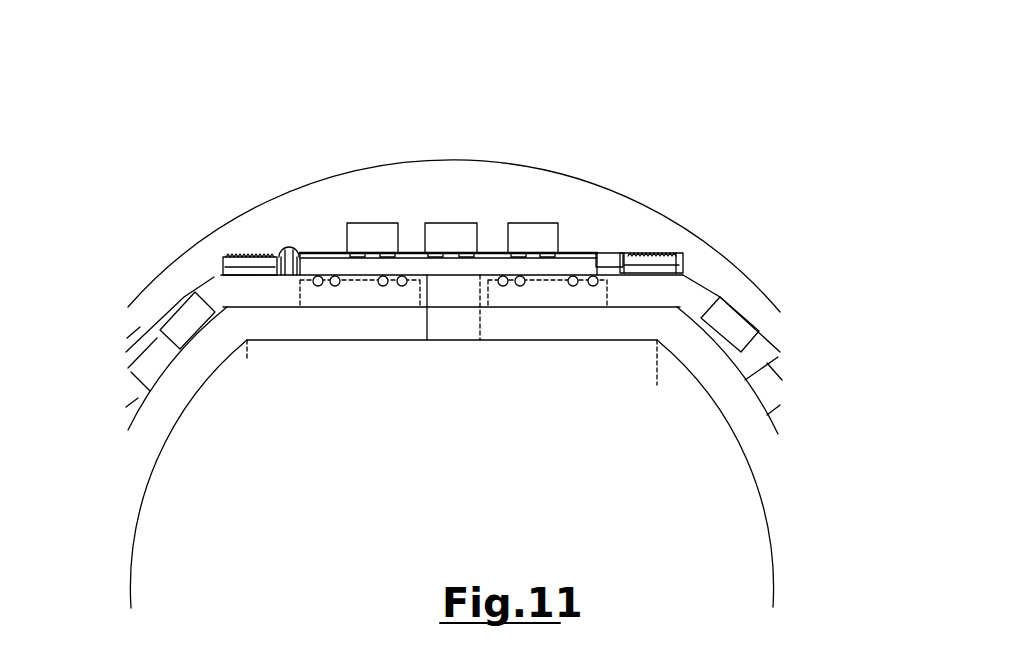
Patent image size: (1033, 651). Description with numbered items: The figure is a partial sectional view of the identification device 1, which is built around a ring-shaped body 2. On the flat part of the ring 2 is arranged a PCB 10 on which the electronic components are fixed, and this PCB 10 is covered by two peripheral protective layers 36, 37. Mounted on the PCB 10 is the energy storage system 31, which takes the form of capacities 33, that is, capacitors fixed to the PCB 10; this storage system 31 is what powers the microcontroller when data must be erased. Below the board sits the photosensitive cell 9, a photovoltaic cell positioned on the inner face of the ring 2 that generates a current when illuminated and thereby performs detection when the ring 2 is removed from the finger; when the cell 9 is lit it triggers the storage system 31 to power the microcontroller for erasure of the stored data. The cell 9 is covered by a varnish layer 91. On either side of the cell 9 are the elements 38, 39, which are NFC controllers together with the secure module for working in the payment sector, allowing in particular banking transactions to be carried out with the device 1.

The identification device 1 is at (226, 138).
The ring-shaped body 2 is at (637, 228).
The PCB 10 is at (590, 260).
The energy storage system 31 is at (353, 198).
The capacities 33 is at (378, 240).
The peripheral protective layer 36 is at (667, 295).
The peripheral protective layer 37 is at (763, 430).
The NFC controller 38 is at (337, 293).
The NFC controller 39 is at (555, 292).
The photosensitive element 9 is at (443, 275).
The varnish layer 91 is at (455, 320).